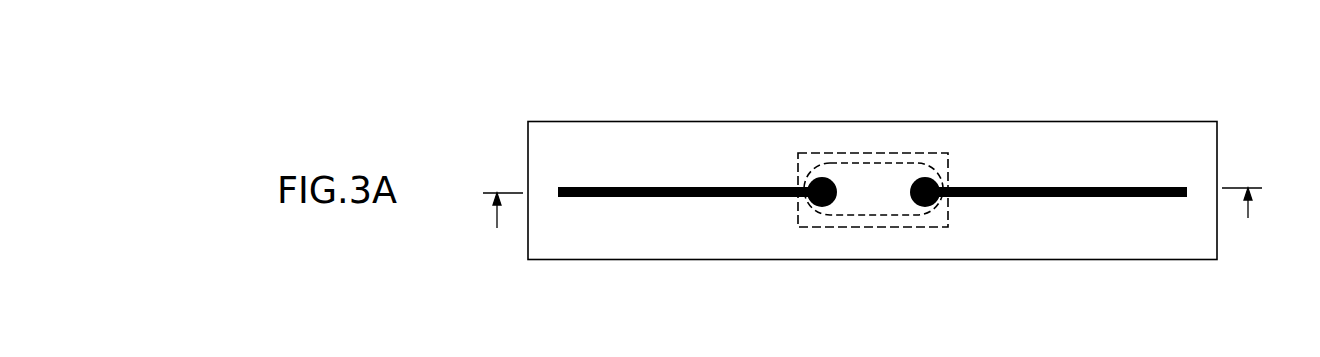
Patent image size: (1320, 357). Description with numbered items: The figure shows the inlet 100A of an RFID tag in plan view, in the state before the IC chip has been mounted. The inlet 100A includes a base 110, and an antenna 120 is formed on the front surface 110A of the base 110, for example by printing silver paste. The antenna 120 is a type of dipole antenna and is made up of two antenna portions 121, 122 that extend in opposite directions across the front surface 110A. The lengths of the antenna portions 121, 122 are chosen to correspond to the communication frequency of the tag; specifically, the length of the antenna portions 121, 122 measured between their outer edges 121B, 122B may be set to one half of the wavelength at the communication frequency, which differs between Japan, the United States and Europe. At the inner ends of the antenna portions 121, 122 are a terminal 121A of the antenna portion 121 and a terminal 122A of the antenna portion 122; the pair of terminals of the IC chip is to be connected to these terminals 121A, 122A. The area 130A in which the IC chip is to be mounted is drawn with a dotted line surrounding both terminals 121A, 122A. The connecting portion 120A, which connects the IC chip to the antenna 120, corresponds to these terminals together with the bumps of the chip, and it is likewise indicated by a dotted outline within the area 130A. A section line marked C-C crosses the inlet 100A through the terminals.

The inlet 100A is at (1212, 83).
The base 110 is at (1217, 157).
The front surface 110A is at (1192, 150).
The antenna 120 is at (1042, 62).
The antenna portion 121 is at (742, 187).
The terminal 121A is at (822, 207).
The edge 121B is at (573, 197).
The antenna portion 122 is at (1014, 187).
The terminal 122A is at (925, 207).
The edge 122B is at (1183, 197).
The connecting portion 120A is at (870, 215).
The area 130A is at (948, 208).